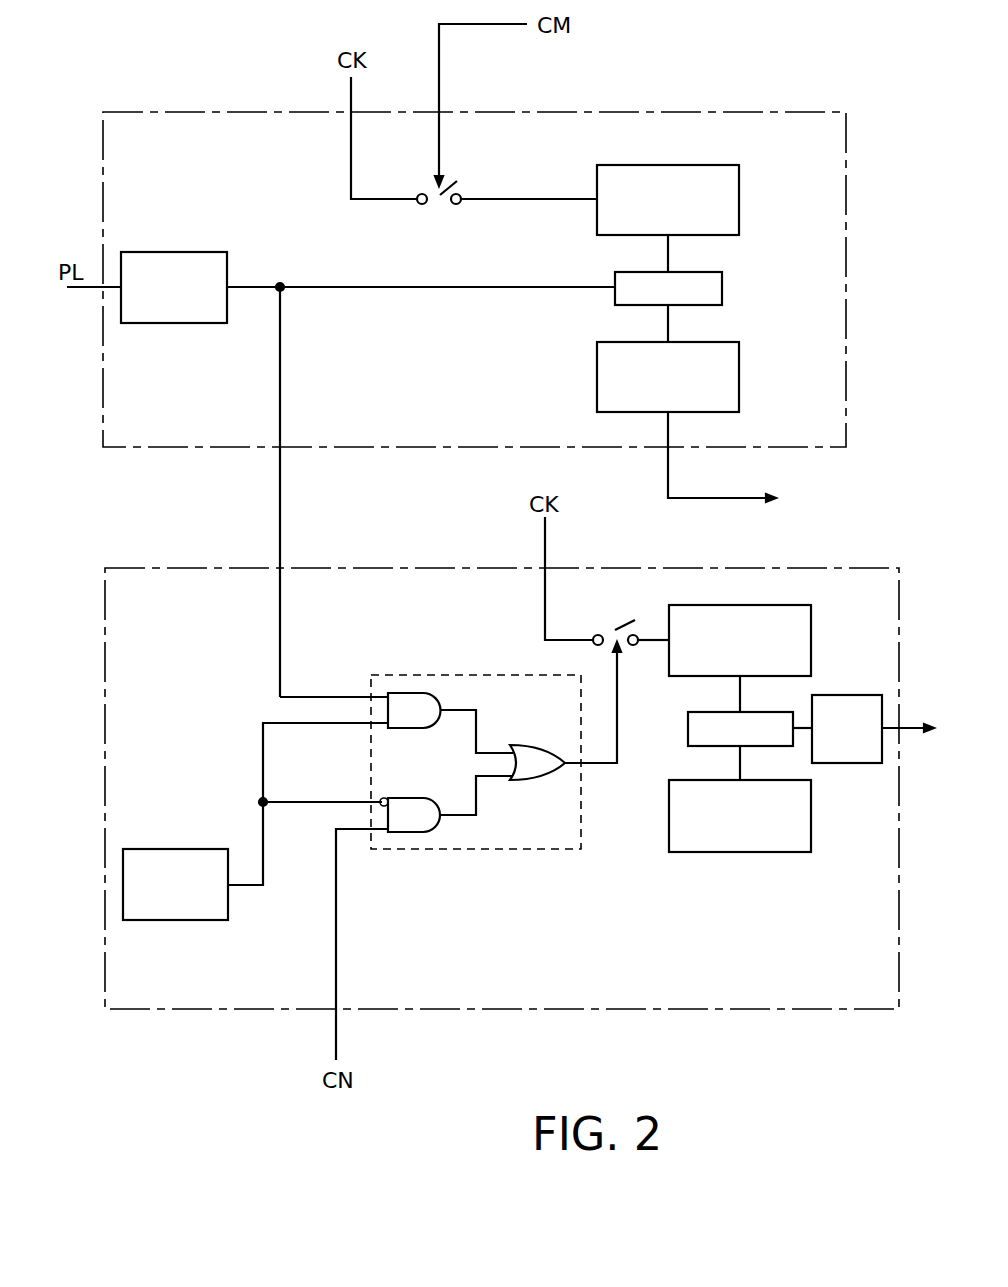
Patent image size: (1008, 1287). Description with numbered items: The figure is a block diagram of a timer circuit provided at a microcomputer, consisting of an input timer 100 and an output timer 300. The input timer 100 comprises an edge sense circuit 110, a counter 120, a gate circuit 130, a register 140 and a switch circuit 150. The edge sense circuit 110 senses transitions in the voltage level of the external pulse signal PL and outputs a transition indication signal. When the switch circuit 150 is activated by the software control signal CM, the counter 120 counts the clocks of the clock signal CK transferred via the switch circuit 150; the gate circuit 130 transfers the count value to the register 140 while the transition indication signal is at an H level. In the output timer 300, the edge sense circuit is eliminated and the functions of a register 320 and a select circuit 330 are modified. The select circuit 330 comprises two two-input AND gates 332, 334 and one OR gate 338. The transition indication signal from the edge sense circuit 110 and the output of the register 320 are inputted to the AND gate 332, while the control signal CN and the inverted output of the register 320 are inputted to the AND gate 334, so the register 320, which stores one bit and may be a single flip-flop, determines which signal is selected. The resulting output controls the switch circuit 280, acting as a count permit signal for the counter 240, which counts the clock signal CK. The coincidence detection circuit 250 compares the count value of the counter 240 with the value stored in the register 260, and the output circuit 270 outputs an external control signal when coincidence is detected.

The input timer 100 is at (192, 118).
The edge sense circuit 110 is at (176, 312).
The counter 120 is at (680, 170).
The gate circuit 130 is at (718, 285).
The register 140 is at (612, 372).
The switch circuit 150 is at (441, 205).
The counter 240 is at (800, 635).
The coincidence detection circuit 250 is at (693, 728).
The register 260 is at (750, 838).
The output circuit 270 is at (855, 752).
The switch circuit 280 is at (620, 627).
The output timer 300 is at (173, 580).
The register 320 is at (186, 915).
The select circuit 330 is at (398, 672).
The AND gate 332 is at (425, 706).
The AND gate 334 is at (411, 822).
The OR gate 338 is at (530, 770).